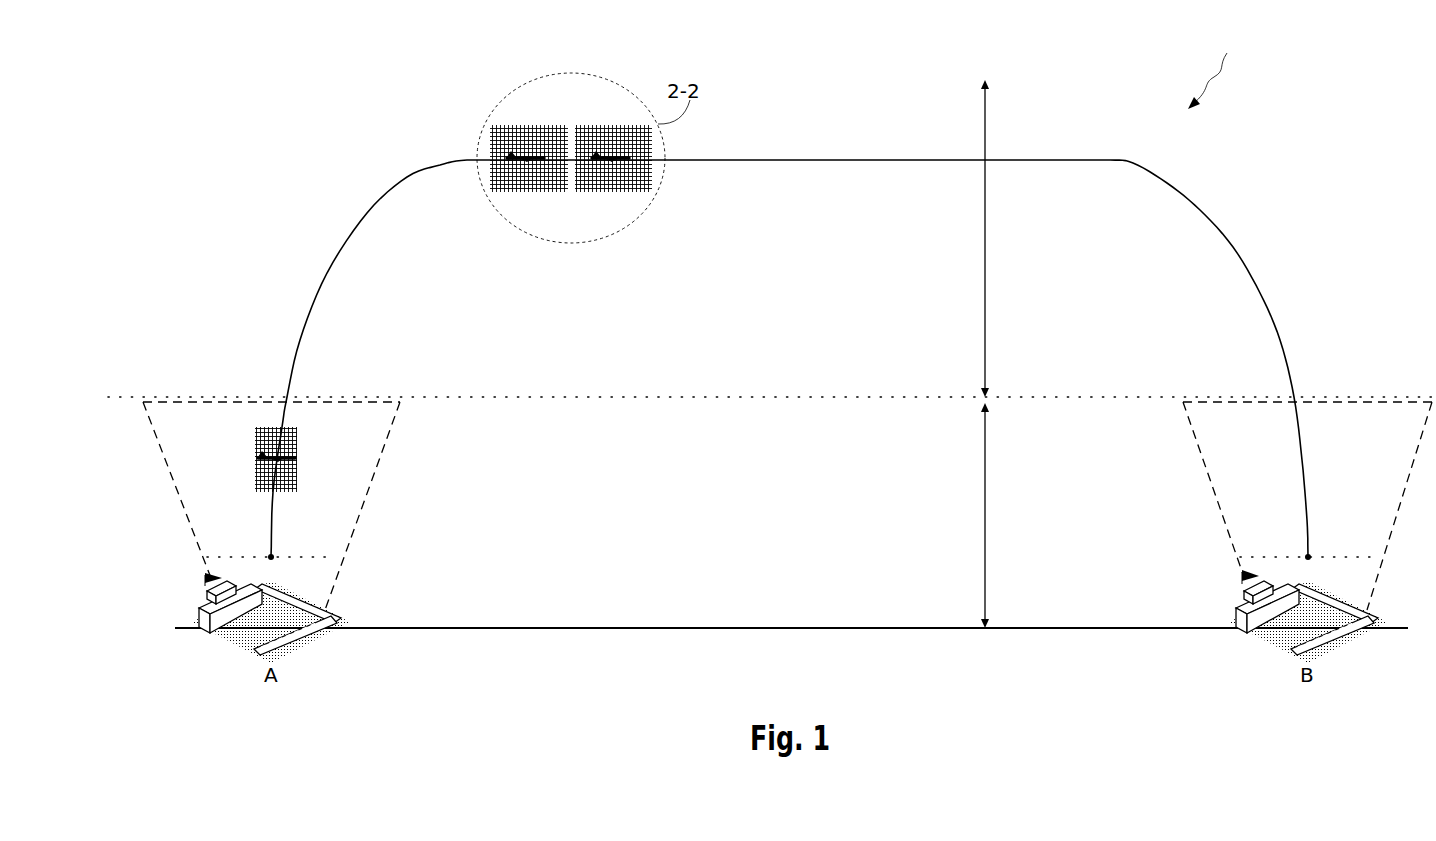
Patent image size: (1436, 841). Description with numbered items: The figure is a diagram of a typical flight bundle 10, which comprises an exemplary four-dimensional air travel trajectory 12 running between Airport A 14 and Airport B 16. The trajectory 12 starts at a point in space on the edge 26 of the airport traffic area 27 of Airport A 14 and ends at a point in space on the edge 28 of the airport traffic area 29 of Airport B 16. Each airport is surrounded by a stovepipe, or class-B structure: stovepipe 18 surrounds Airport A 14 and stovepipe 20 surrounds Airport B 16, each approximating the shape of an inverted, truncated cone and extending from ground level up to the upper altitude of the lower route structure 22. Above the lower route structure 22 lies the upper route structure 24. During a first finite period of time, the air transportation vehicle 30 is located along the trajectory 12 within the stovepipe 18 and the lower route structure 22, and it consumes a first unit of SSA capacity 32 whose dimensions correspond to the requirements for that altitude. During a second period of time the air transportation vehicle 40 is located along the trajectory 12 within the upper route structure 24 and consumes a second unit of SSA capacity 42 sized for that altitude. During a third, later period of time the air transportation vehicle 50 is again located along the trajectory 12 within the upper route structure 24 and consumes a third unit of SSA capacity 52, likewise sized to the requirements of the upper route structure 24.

The flight bundle 10 is at (1215, 70).
The four-dimensional air travel trajectory 12 is at (750, 159).
The Airport A 14 is at (316, 593).
The Airport B 16 is at (1340, 598).
The stovepipe 18 is at (397, 422).
The stovepipe 20 is at (1198, 450).
The lower route structure 22 is at (985, 480).
The upper route structure 24 is at (985, 252).
The edge of airport traffic area 26 is at (295, 557).
The airport traffic area 27 is at (205, 577).
The edge of airport traffic area 28 is at (1358, 547).
The airport traffic area 29 is at (1242, 573).
The air transportation vehicle 30 is at (297, 448).
The first unit of SSA capacity 32 is at (298, 475).
The air transportation vehicle 40 is at (524, 169).
The second unit of SSA capacity 42 is at (552, 192).
The air transportation vehicle 50 is at (610, 169).
The third unit of SSA capacity 52 is at (588, 192).